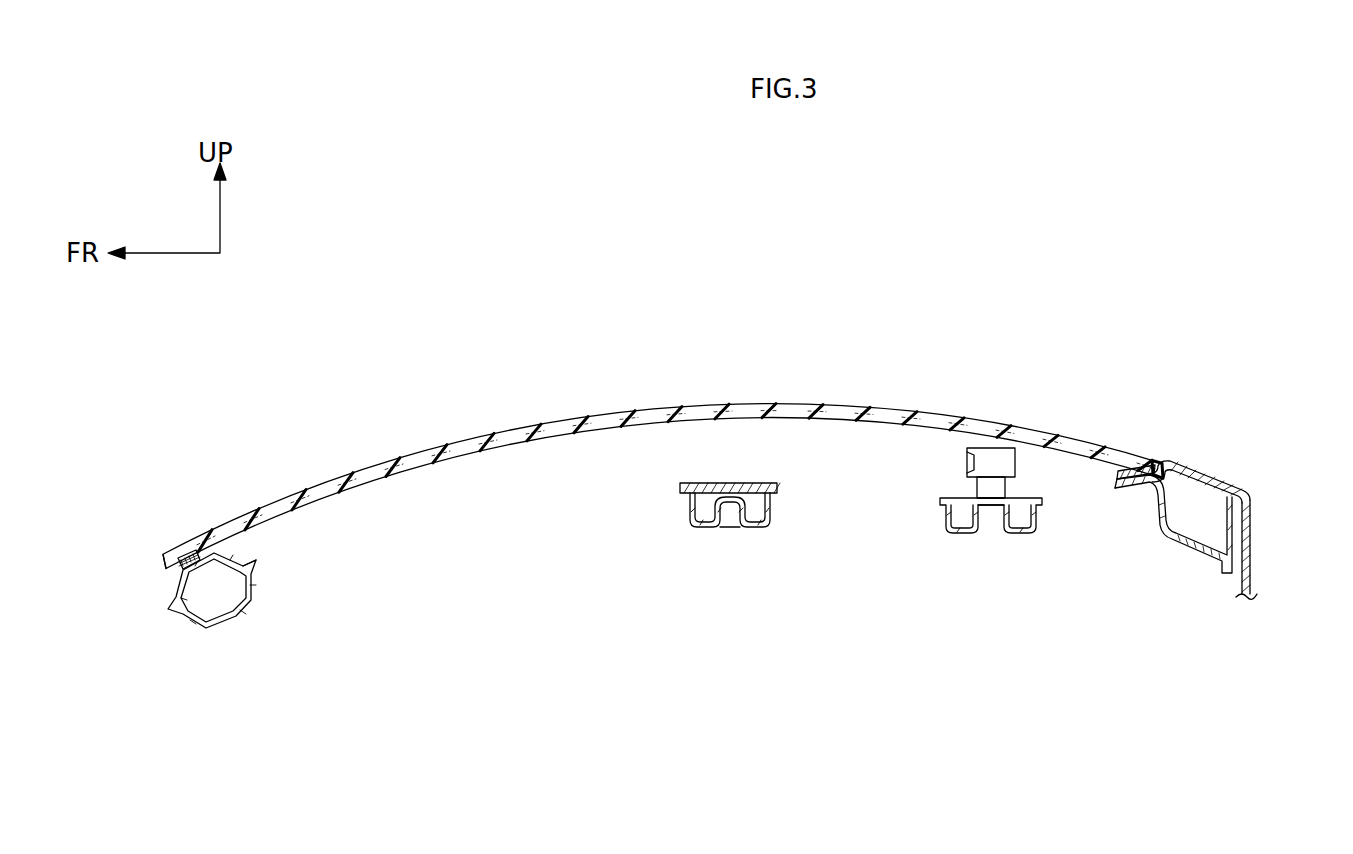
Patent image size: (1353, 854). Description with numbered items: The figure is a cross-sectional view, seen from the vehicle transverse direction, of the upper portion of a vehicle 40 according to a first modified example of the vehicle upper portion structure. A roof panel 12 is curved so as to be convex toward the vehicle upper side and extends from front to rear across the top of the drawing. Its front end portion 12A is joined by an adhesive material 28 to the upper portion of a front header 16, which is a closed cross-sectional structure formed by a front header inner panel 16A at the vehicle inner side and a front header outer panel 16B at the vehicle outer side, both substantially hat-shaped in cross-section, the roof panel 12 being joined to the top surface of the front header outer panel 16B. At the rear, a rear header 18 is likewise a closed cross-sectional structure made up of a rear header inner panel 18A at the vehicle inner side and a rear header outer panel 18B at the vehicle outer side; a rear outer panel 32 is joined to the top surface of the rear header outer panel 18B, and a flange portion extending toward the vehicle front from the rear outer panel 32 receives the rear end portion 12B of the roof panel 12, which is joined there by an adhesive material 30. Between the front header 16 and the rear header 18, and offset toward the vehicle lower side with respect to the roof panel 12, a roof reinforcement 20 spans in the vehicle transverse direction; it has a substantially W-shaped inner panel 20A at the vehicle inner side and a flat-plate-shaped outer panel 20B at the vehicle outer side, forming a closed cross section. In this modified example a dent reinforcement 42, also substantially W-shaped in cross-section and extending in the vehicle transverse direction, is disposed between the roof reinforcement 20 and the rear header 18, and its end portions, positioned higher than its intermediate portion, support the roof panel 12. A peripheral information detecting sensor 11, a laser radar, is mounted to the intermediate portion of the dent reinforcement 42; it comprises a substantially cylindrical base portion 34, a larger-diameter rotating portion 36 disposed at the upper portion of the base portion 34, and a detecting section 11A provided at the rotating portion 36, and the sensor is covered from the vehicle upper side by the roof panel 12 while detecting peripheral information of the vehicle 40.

The vehicle 40 is at (641, 297).
The roof panel 12 is at (838, 398).
The front end portion 12A is at (183, 547).
The rear end portion 12B is at (1149, 458).
The peripheral information detecting sensor 11 is at (984, 441).
The detecting section 11A is at (967, 463).
The rotating portion 36 is at (1015, 464).
The base portion 34 is at (960, 500).
The dent reinforcement 42 is at (963, 533).
The roof reinforcement 20 is at (690, 533).
The inner panel 20A is at (742, 527).
The outer panel 20B is at (755, 483).
The front header 16 is at (234, 622).
The front header inner panel 16A is at (253, 594).
The front header outer panel 16B is at (248, 556).
The adhesive material 28 is at (180, 568).
The adhesive material 30 is at (1118, 470).
The rear header 18 is at (1163, 546).
The rear header inner panel 18A is at (1185, 557).
The rear header outer panel 18B is at (1244, 530).
The rear outer panel 32 is at (1234, 487).